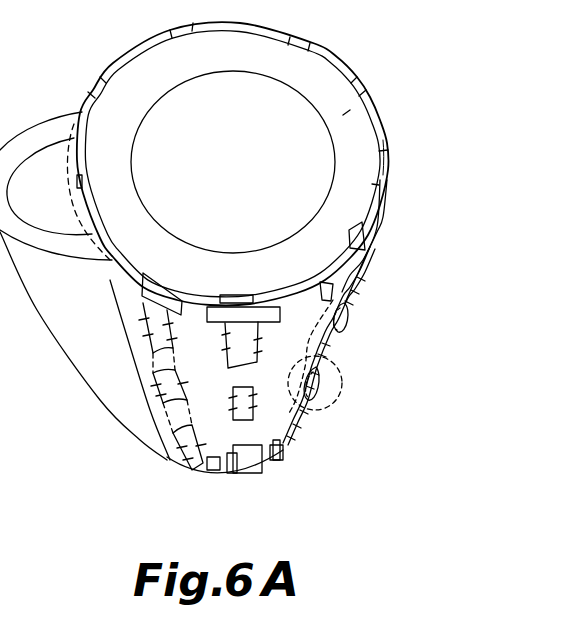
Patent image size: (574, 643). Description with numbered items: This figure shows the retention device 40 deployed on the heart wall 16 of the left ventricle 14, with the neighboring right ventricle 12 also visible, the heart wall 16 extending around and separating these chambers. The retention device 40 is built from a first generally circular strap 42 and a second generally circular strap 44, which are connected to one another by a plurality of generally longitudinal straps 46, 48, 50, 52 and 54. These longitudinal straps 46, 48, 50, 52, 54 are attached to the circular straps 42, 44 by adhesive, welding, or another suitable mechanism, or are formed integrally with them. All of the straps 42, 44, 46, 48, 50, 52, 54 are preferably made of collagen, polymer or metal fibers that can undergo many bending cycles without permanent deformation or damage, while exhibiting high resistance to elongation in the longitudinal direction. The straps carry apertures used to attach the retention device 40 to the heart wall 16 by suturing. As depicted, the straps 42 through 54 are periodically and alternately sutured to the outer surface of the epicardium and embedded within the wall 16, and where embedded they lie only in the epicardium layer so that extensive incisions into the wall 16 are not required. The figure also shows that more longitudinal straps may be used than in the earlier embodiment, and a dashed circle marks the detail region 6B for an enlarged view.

The right ventricle 12 is at (55, 204).
The left ventricle 14 is at (250, 169).
The heart wall 16 is at (355, 135).
The retention device 40 is at (368, 255).
The first generally circular strap 42 is at (123, 287).
The second generally circular strap 44 is at (210, 472).
The longitudinal strap 46 is at (356, 241).
The longitudinal strap 48 is at (386, 163).
The longitudinal strap 50 is at (360, 84).
The longitudinal strap 52 is at (162, 287).
The longitudinal strap 54 is at (245, 300).
The detail circle 6B is at (347, 384).